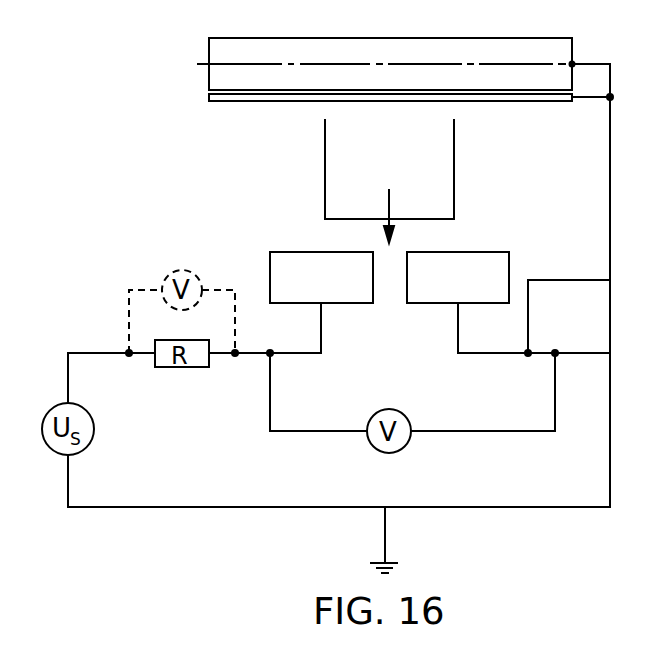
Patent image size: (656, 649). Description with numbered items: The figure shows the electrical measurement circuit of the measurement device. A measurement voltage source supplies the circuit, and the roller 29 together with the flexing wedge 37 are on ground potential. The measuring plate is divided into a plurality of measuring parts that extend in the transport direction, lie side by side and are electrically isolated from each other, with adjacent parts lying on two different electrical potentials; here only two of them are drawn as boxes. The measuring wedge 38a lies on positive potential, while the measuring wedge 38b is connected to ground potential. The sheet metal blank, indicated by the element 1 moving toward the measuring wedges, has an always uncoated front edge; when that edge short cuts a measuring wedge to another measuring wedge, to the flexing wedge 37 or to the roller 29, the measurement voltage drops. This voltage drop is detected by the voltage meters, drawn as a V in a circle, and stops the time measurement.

The roller 29 is at (258, 48).
The flexing wedge 37 is at (237, 101).
The process chamber / substrate region 1 is at (432, 158).
The measuring wedge 38a is at (288, 260).
The measuring wedge 38b is at (475, 260).